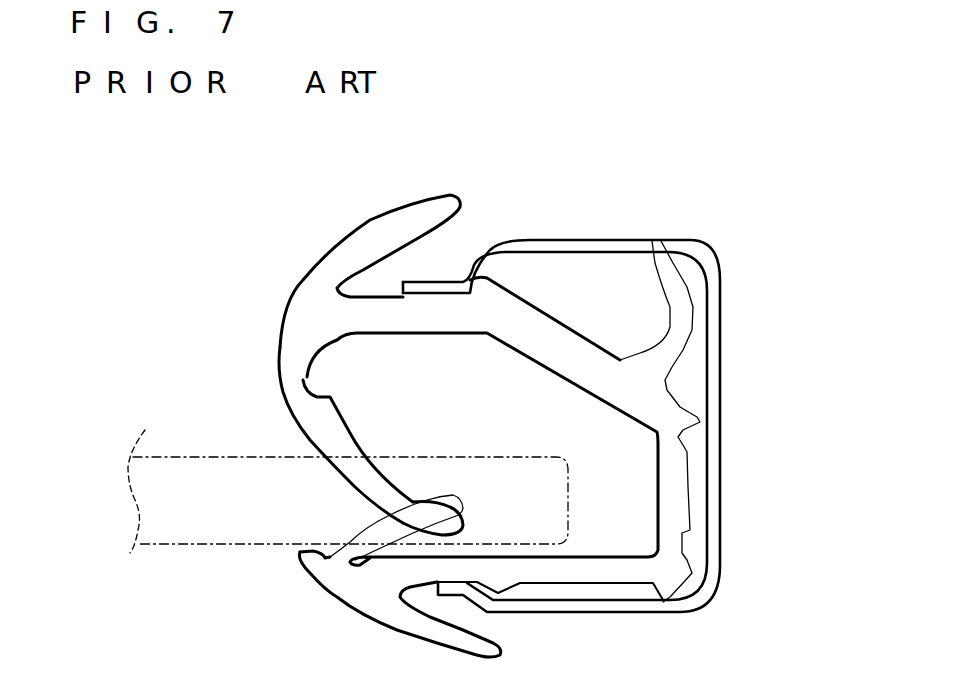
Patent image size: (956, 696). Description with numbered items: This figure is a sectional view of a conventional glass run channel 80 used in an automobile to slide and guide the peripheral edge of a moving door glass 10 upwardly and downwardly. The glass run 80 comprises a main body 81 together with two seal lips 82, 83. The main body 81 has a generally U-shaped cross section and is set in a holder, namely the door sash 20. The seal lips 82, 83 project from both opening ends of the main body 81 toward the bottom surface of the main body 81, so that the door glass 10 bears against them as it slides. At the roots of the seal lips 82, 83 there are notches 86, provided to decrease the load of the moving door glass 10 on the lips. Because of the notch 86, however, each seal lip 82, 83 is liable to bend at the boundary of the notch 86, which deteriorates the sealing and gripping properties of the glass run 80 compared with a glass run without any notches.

The door glass 10 is at (203, 503).
The door sash 20 is at (598, 232).
The glass run channel 80 is at (226, 248).
The main body 81 is at (590, 568).
The seal lip 82 is at (337, 417).
The seal lip 83 is at (453, 495).
The notch 86 is at (307, 377).